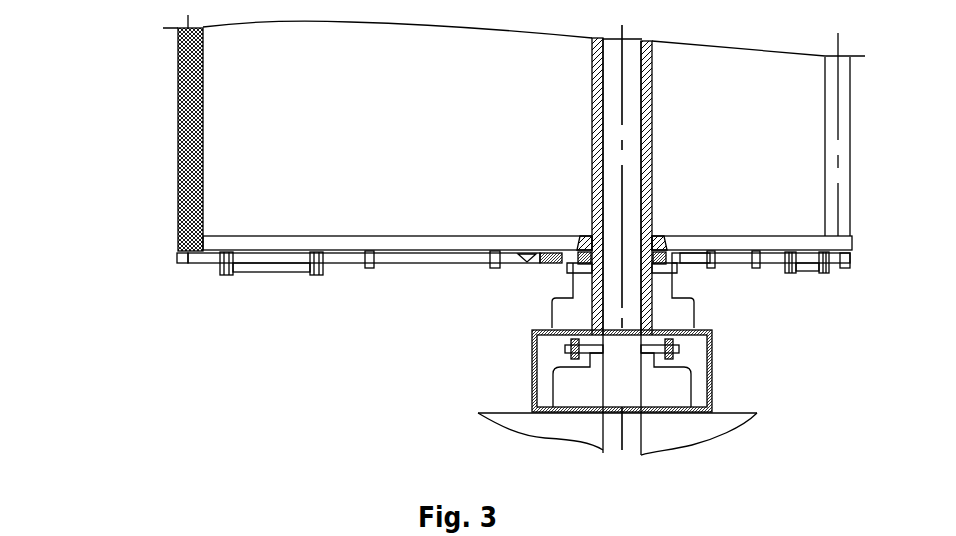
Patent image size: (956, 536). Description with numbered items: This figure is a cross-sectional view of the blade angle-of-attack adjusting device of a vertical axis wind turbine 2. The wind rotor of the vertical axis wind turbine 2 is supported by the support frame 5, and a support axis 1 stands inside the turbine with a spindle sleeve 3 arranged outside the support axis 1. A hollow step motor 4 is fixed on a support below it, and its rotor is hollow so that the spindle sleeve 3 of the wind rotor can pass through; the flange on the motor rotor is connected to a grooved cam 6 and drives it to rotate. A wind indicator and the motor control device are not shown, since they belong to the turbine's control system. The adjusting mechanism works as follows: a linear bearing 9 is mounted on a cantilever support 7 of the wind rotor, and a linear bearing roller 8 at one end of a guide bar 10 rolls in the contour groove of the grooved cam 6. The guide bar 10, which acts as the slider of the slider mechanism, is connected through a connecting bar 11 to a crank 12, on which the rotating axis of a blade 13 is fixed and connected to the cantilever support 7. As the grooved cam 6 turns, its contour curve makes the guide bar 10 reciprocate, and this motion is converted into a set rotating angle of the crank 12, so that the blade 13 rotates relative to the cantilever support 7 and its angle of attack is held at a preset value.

The support axis 1 is at (880, 466).
The vertical axis wind turbine 2 is at (850, 398).
The spindle sleeve 3 is at (838, 326).
The step motor 4 is at (850, 298).
The support frame 5 is at (533, 368).
The grooved cam 6 is at (573, 283).
The cantilever support 7 is at (863, 210).
The linear bearing roller 8 is at (540, 252).
The linear bearing 9 is at (363, 252).
The guide bar 10 is at (430, 258).
The connecting bar 11 is at (275, 268).
The crank 12 is at (200, 258).
The blade 13 is at (175, 138).